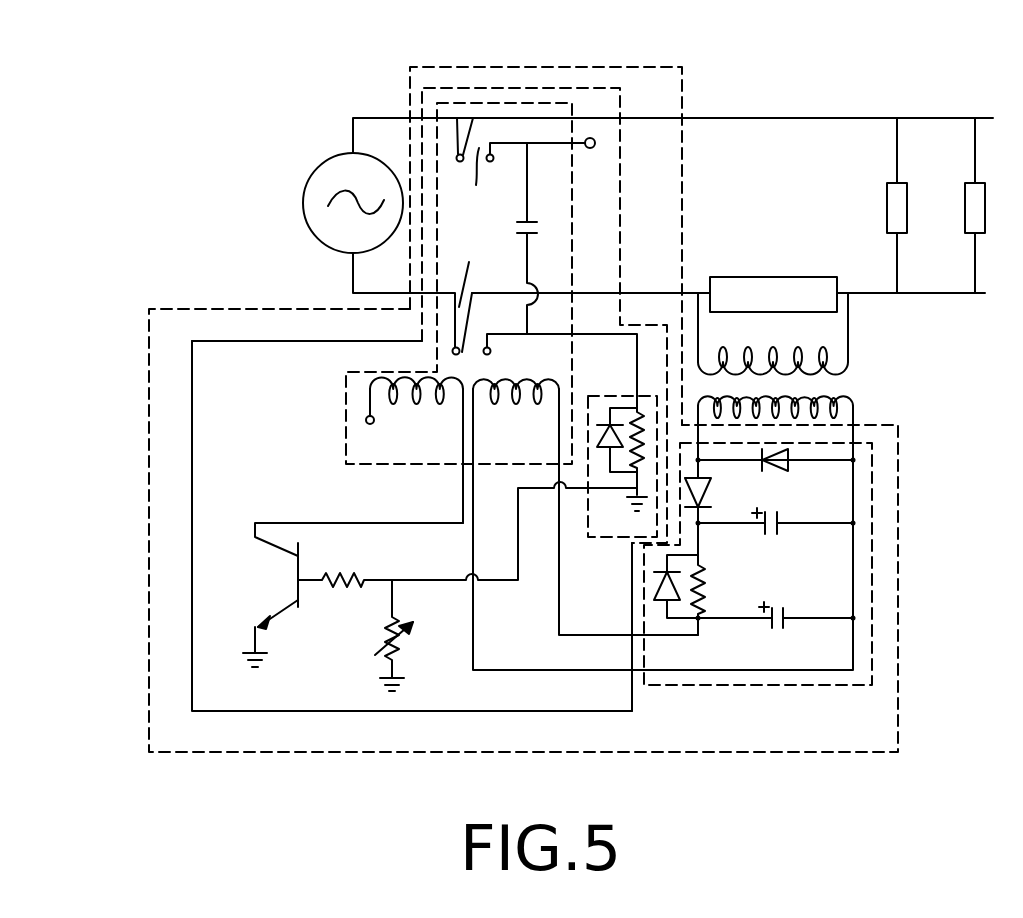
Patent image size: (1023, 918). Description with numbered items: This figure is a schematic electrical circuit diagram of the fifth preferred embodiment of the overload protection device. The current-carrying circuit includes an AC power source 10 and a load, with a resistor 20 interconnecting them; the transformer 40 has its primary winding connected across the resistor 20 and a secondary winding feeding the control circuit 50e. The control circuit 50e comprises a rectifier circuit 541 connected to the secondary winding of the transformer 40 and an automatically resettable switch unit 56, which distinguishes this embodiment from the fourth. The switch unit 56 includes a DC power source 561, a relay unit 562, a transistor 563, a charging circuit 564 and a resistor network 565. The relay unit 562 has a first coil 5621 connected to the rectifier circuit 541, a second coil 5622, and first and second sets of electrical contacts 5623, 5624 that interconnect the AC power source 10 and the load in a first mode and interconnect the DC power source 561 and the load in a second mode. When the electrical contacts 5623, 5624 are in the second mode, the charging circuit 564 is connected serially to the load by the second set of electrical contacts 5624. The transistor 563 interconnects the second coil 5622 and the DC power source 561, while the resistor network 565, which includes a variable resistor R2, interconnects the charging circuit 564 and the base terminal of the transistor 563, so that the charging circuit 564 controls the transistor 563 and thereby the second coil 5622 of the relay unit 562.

The AC power source 10 is at (303, 226).
The resistor 20 is at (755, 277).
The transformer 40 is at (845, 405).
The control circuit 50e is at (898, 497).
The automatically resettable switch unit 56 is at (620, 190).
The DC power source 561 is at (593, 138).
The relay unit 562 is at (478, 102).
The first coil 5621 is at (518, 401).
The second coil 5622 is at (372, 384).
The first set of electrical contacts 5623 is at (517, 168).
The second set of electrical contacts 5624 is at (544, 316).
The transistor 563 is at (273, 570).
The charging circuit 564 is at (595, 537).
The resistor network 565 is at (290, 637).
The rectifier circuit 541 is at (872, 572).
The variable resistor R2 is at (366, 635).